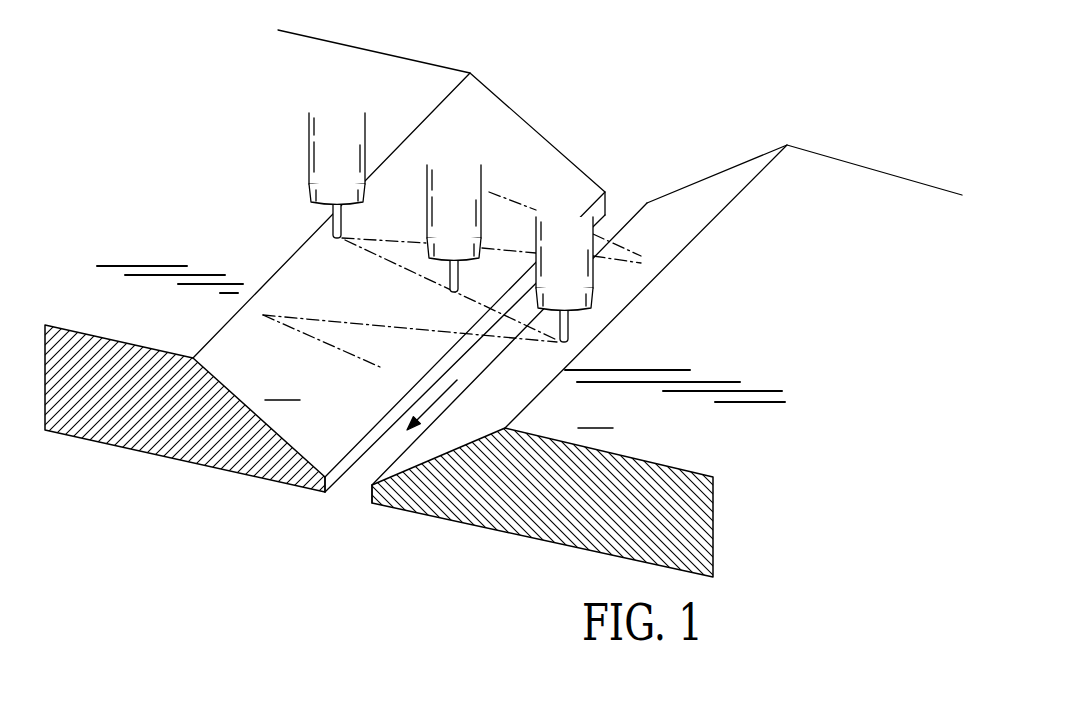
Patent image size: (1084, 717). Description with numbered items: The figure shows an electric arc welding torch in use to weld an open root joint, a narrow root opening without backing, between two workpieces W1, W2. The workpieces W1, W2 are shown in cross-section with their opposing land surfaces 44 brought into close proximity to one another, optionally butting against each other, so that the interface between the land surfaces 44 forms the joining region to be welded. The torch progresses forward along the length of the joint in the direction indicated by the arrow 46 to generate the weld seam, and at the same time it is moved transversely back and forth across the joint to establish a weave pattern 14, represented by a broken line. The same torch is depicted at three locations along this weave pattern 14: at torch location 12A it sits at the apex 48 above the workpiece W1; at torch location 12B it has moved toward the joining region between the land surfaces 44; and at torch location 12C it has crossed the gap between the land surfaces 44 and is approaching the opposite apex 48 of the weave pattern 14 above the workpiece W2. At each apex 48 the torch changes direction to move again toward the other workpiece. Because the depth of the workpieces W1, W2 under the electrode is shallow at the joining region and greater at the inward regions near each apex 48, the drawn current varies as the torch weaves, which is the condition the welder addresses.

The torch location 12A is at (309, 130).
The torch location 12B is at (483, 180).
The torch location 12C is at (594, 275).
The weave pattern 14 is at (330, 320).
The land surfaces 44 is at (372, 493).
The arrow 46 is at (428, 412).
The apex 48 is at (263, 315).
The workpiece W1 is at (450, 350).
The workpiece W2 is at (542, 350).